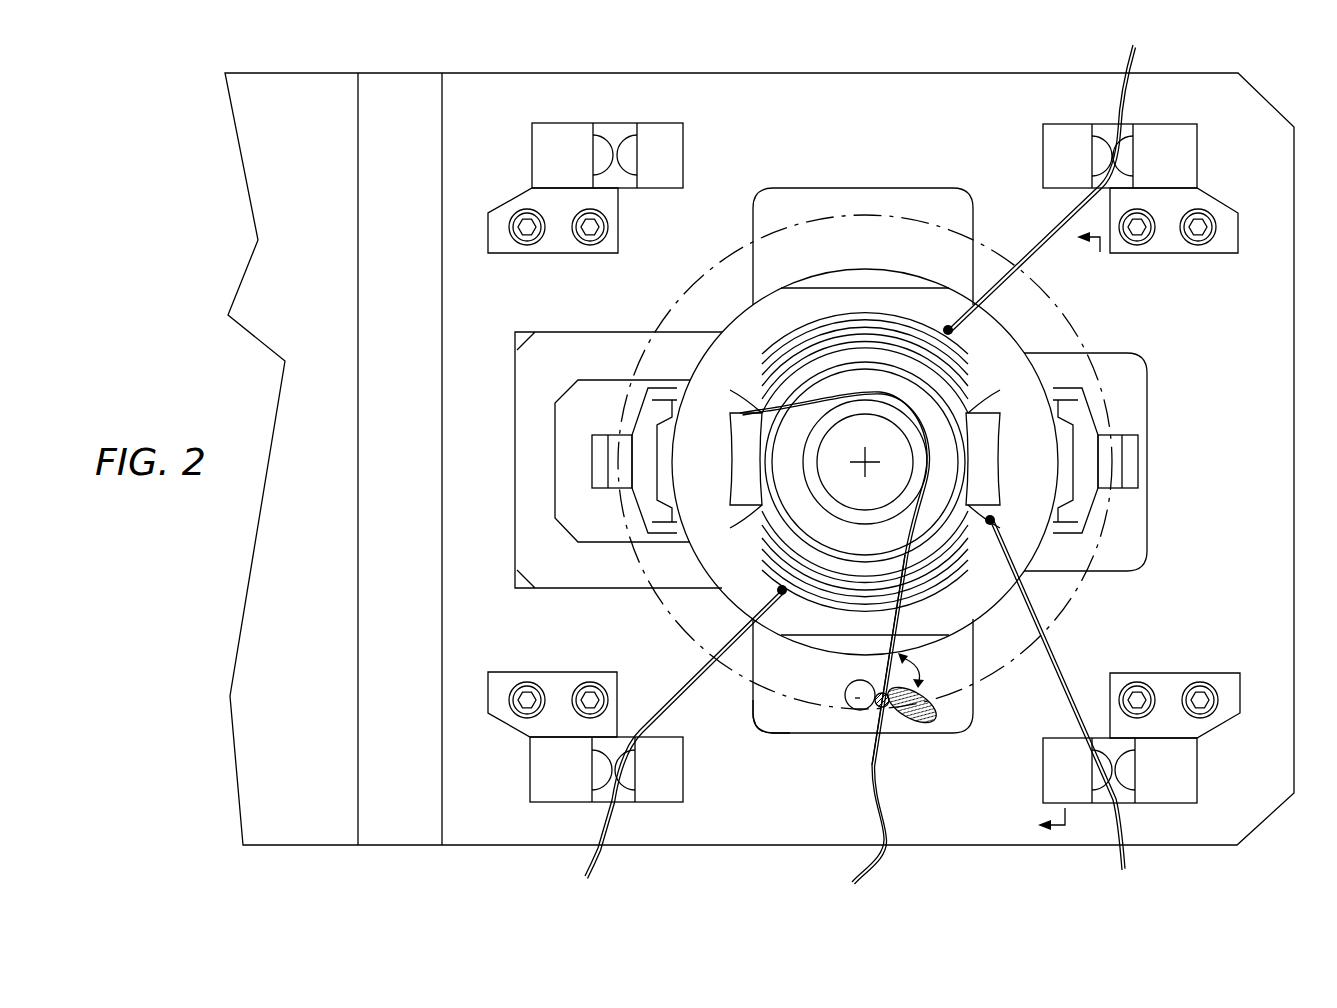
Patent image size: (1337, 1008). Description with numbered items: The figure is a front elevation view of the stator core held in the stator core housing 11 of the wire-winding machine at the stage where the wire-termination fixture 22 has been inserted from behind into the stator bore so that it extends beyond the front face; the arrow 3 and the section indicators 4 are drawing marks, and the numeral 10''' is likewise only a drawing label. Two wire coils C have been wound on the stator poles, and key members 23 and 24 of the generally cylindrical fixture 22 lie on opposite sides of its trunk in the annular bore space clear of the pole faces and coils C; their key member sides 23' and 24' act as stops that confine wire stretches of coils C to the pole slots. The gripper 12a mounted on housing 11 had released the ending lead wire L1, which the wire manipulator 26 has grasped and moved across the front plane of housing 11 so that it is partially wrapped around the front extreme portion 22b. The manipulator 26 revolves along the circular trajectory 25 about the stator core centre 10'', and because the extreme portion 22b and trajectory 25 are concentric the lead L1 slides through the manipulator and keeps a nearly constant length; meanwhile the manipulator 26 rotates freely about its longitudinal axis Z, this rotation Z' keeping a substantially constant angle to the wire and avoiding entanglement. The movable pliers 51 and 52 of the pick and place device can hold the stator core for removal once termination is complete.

The actuator assembly 3 is at (1290, 93).
The stator core housing 11 is at (817, 73).
The gripper 12a is at (685, 148).
The section line 4- 4 is at (1059, 533).
The stator core centre 10'' is at (870, 422).
The lead wires 10''' is at (860, 464).
The wire-termination fixture 22 is at (787, 453).
The front extreme portion 22b is at (828, 512).
The key member 23 is at (1040, 403).
The key member side 23' is at (1087, 411).
The key member 24 is at (729, 400).
The key member side 24' is at (802, 445).
The circular trajectory 25 is at (1062, 592).
The wire manipulator 26 is at (930, 722).
The movable pliers 51 is at (1133, 462).
The movable pliers 52 is at (600, 471).
The wire coil C is at (853, 323).
The lead wire L1 is at (888, 652).
The longitudinal axis Z is at (883, 725).
The rotation Z' is at (771, 750).